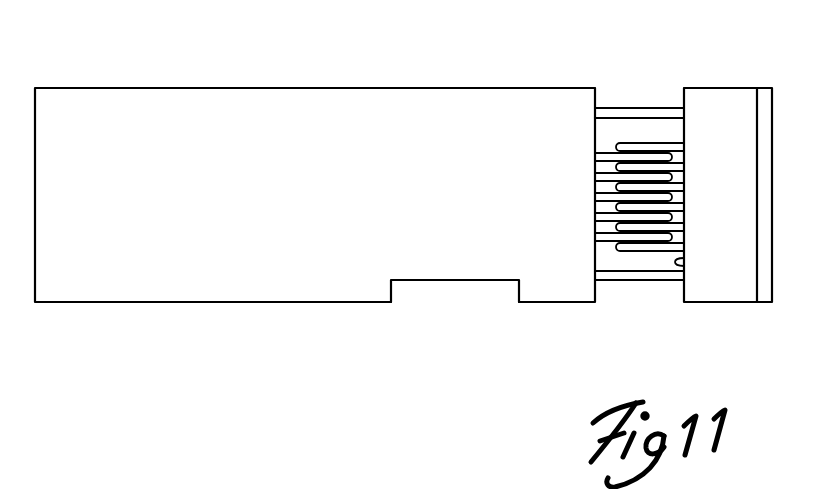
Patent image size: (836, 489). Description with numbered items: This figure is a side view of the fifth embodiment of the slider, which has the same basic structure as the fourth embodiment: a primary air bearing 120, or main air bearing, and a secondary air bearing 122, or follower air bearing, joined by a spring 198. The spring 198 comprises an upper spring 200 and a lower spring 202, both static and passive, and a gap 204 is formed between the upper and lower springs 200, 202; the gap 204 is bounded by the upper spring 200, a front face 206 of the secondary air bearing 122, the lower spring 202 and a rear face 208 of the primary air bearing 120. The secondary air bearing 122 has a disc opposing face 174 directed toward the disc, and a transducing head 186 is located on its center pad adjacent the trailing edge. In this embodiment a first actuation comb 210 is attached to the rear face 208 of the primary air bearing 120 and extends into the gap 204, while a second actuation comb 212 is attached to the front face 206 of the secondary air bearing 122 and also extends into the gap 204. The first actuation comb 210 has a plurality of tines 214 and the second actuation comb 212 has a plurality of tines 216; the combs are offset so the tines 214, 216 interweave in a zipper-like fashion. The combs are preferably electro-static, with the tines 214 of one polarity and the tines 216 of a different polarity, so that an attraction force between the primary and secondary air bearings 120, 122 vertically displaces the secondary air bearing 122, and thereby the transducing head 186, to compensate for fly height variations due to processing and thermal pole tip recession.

The primary air bearing 120 is at (230, 116).
The secondary air bearing 122 is at (722, 100).
The disc opposing face 174 is at (297, 302).
The transducing head 186 is at (778, 308).
The spring 198 is at (638, 92).
The upper spring 200 is at (658, 108).
The lower spring 202 is at (643, 280).
The gap 204 is at (623, 128).
The front face 206 is at (685, 155).
The rear face 208 is at (593, 232).
The first actuation comb 210 is at (590, 162).
The second actuation comb 212 is at (697, 186).
The tines 214 is at (603, 183).
The tines 216 is at (680, 233).